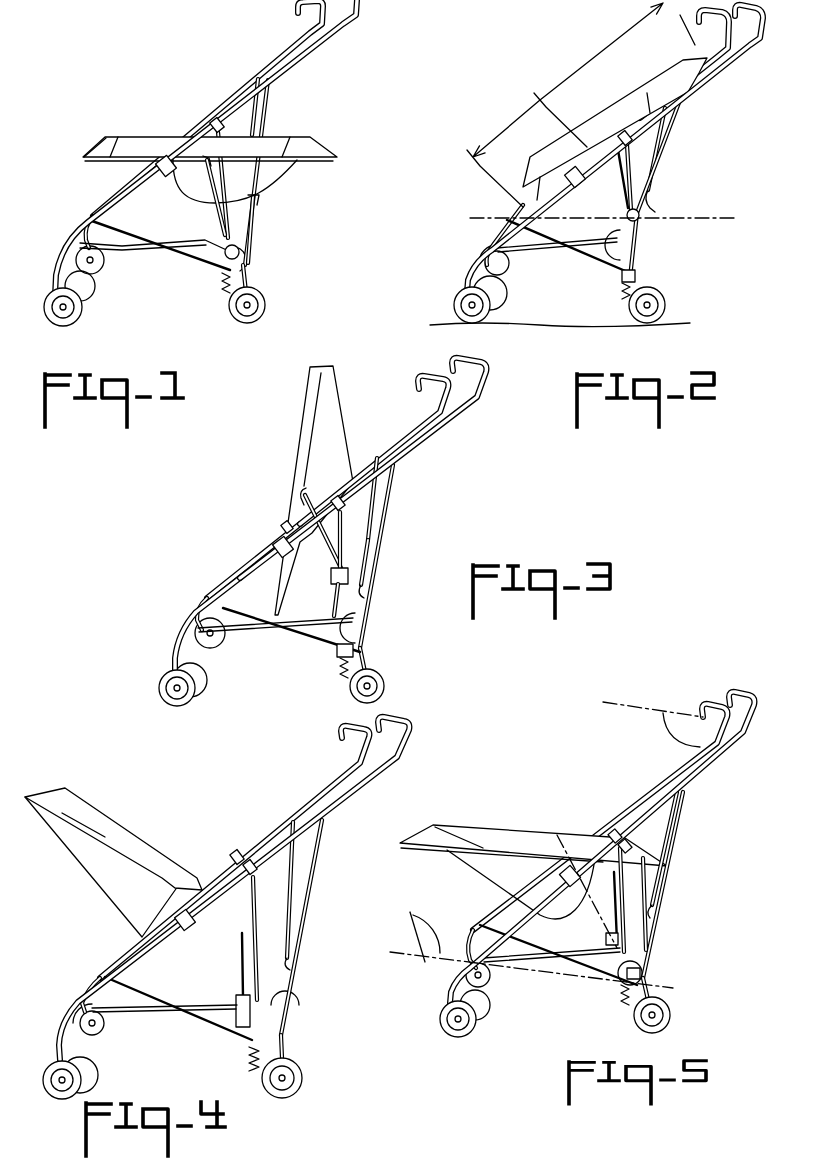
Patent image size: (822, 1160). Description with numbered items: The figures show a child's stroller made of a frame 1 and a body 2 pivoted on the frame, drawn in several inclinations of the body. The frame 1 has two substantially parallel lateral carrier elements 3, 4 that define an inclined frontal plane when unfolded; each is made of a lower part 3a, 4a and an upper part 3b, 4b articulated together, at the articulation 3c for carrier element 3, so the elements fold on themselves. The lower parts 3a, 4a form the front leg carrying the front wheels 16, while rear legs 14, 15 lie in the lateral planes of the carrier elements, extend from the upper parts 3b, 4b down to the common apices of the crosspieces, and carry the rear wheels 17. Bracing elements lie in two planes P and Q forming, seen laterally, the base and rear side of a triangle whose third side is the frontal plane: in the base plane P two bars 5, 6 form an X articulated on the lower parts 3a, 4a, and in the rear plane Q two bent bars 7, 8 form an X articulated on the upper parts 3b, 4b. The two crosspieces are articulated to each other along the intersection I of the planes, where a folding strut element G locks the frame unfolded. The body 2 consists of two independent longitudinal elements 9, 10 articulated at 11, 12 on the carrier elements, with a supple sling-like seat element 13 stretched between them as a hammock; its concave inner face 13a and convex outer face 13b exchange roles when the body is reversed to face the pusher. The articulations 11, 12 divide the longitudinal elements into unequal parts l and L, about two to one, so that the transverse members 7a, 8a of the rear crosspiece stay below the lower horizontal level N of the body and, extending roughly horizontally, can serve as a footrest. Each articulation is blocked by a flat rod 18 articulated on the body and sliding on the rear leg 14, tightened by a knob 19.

In FIG. 1, the frame 1 is at (198, 163).
In FIG. 1, the body 2 is at (121, 130).
In FIG. 1, the carrier element 3 is at (316, 50).
In FIG. 3, the lower part of carrier element 3a is at (223, 606).
In FIG. 3, the upper part of carrier element 3b is at (414, 444).
In FIG. 3, the articulation 3c is at (270, 549).
In FIG. 1, the carrier element 4 is at (284, 52).
In FIG. 3, the lower part of carrier element 4a is at (228, 583).
In FIG. 3, the upper part of carrier element 4b is at (392, 442).
In FIG. 1, the bar 5 is at (130, 250).
In FIG. 1, the bar 6 is at (124, 221).
In FIG. 2, the bent bar 7 is at (670, 180).
In FIG. 3, the transverse member 7a is at (366, 598).
In FIG. 2, the bent bar 8 is at (665, 162).
In FIG. 3, the transverse member 8a is at (372, 563).
In FIG. 1, the longitudinal element 9 is at (108, 160).
In FIG. 1, the longitudinal element 10 is at (146, 132).
In FIG. 1, the articulation 11 is at (188, 163).
In FIG. 2, the articulation 11 is at (602, 146).
In FIG. 3, the articulation 11 is at (283, 520).
In FIG. 1, the articulation 12 is at (173, 140).
In FIG. 2, the articulation 12 is at (577, 150).
In FIG. 1, the seat element 13 is at (278, 181).
In FIG. 1, the inner face of seat element 13a is at (273, 147).
In FIG. 4, the inner face of seat element 13a is at (122, 877).
In FIG. 2, the outer face of seat element 13b is at (615, 139).
In FIG. 4, the outer face of seat element 13b is at (105, 834).
In FIG. 3, the rear leg 14 is at (347, 537).
In FIG. 4, the rear leg 14 is at (258, 967).
In FIG. 4, the rear leg 15 is at (240, 963).
In FIG. 4, the front wheel 16 is at (82, 1078).
In FIG. 4, the rear wheel 17 is at (296, 1064).
In FIG. 3, the rod 18 is at (307, 492).
In FIG. 3, the knob 19 is at (331, 581).
In FIG. 1, the folding strut element G is at (248, 260).
In FIG. 3, the folding strut element G is at (362, 640).
In FIG. 2, the longer part of longitudinal element L is at (614, 75).
In FIG. 2, the shorter part of longitudinal element l is at (503, 150).
In FIG. 2, the lower horizontal level N is at (458, 218).
In FIG. 5, the intersection I is at (557, 835).
In FIG. 5, the base plane P is at (388, 955).
In FIG. 5, the rear plane Q is at (653, 724).